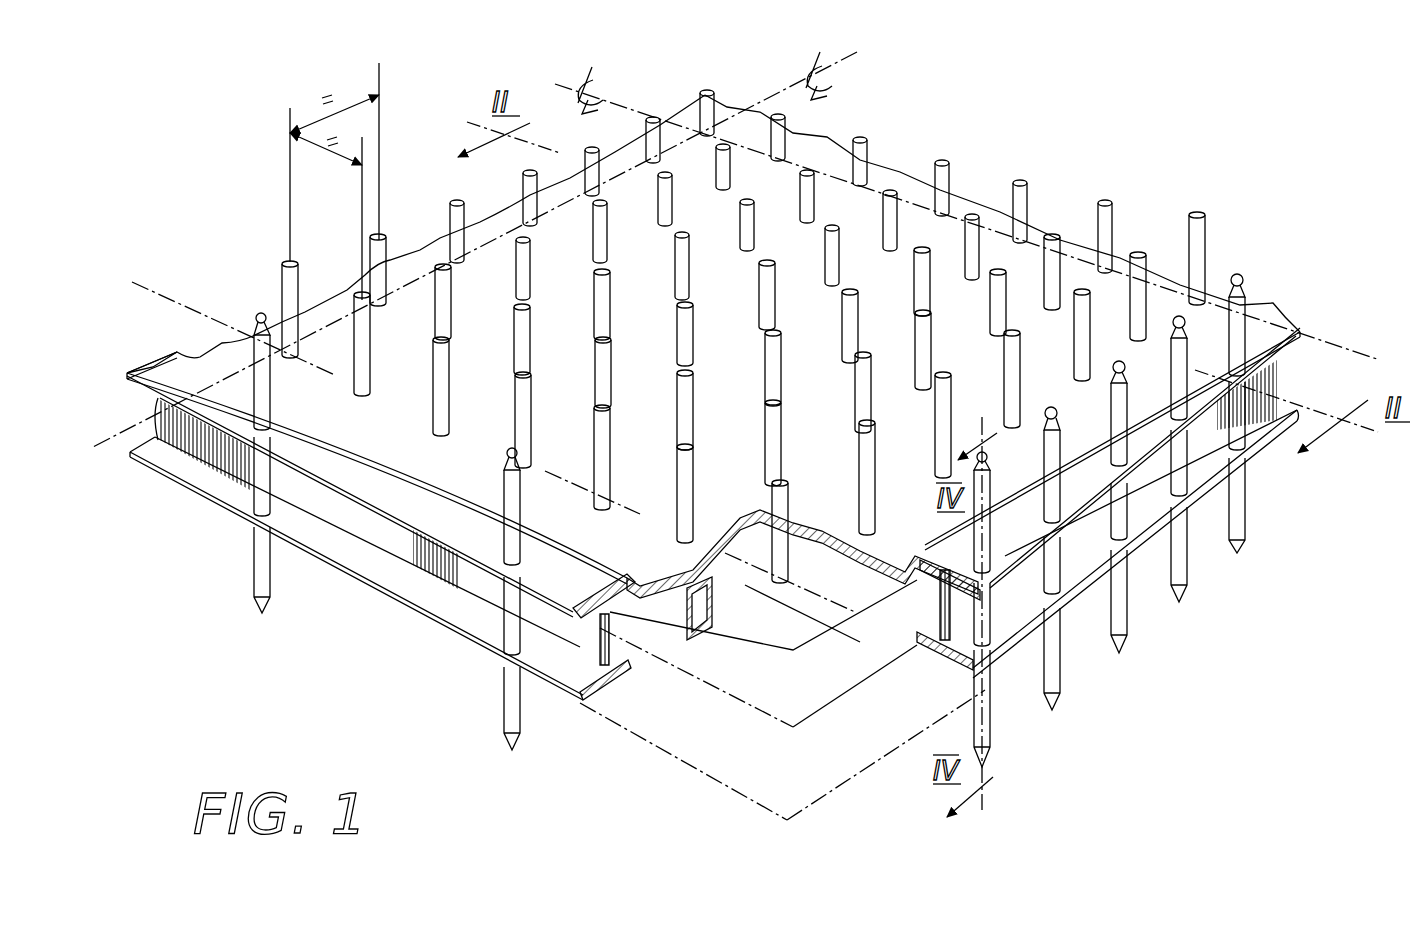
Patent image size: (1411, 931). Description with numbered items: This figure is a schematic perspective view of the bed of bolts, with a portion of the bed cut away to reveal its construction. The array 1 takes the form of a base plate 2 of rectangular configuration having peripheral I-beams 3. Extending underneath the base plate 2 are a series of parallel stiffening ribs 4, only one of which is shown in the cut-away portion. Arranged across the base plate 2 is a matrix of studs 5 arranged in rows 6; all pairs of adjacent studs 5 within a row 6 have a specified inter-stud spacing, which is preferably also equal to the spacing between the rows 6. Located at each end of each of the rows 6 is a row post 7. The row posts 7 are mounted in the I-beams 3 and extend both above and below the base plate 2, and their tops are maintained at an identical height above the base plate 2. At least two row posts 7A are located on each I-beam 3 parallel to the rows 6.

The array 1 is at (1105, 170).
The base plate 2 is at (850, 570).
The I-beams 3 is at (443, 610).
The stiffening ribs 4 is at (690, 636).
The studs 5 is at (932, 260).
The rows 6 is at (200, 300).
The row post 7 is at (1183, 570).
The row posts 7A is at (258, 566).